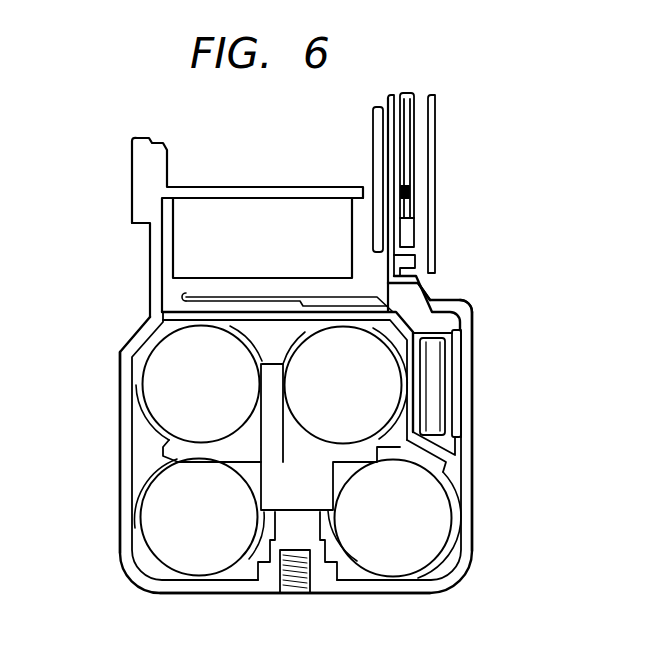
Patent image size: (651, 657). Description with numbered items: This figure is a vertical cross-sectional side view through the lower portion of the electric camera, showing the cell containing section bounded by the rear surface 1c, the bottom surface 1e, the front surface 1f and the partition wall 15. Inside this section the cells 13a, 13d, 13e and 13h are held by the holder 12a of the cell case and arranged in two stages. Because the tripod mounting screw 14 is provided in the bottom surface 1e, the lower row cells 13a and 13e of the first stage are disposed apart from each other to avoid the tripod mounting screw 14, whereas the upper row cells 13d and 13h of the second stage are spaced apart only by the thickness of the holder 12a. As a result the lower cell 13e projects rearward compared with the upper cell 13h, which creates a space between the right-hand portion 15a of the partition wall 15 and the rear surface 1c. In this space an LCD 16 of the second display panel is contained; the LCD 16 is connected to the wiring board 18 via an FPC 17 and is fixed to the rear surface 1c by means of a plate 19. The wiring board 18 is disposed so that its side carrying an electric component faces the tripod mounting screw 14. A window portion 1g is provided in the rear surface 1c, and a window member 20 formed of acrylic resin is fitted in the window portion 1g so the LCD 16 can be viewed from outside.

The rear surface 1c is at (470, 306).
The bottom surface 1e is at (220, 585).
The front surface 1f is at (125, 437).
The window portion 1g is at (473, 330).
The holder 12a is at (223, 450).
The cell 13a is at (177, 560).
The cell 13d is at (163, 372).
The cell 13e is at (433, 523).
The cell 13h is at (360, 353).
The tripod mounting screw 14 is at (270, 583).
The partition wall 15 is at (445, 456).
The right-hand portion of the partition wall 15a is at (430, 352).
The LCD 16 is at (443, 414).
The FPC 17 is at (410, 318).
The wiring board 18 is at (185, 297).
The plate 19 is at (457, 376).
The window member 20 is at (465, 402).